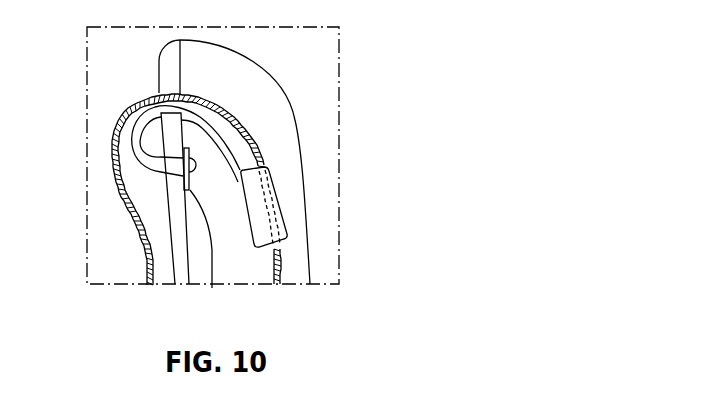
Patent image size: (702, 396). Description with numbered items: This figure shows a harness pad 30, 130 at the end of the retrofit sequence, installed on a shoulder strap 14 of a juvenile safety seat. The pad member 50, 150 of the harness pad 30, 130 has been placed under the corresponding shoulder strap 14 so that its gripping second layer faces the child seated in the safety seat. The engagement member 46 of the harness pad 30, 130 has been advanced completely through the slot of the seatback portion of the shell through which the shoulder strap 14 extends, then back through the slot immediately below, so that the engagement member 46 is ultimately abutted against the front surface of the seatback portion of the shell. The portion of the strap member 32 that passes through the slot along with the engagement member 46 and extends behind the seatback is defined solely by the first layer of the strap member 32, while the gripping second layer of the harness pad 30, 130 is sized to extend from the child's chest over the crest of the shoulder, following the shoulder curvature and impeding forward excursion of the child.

The shoulder strap 14 is at (248, 140).
The harness pad 30 is at (358, 231).
The harness pad 130 is at (291, 239).
The pad member 50 is at (348, 201).
The pad member 150 is at (286, 193).
The strap member 32 is at (158, 165).
The engagement member 46 is at (204, 272).